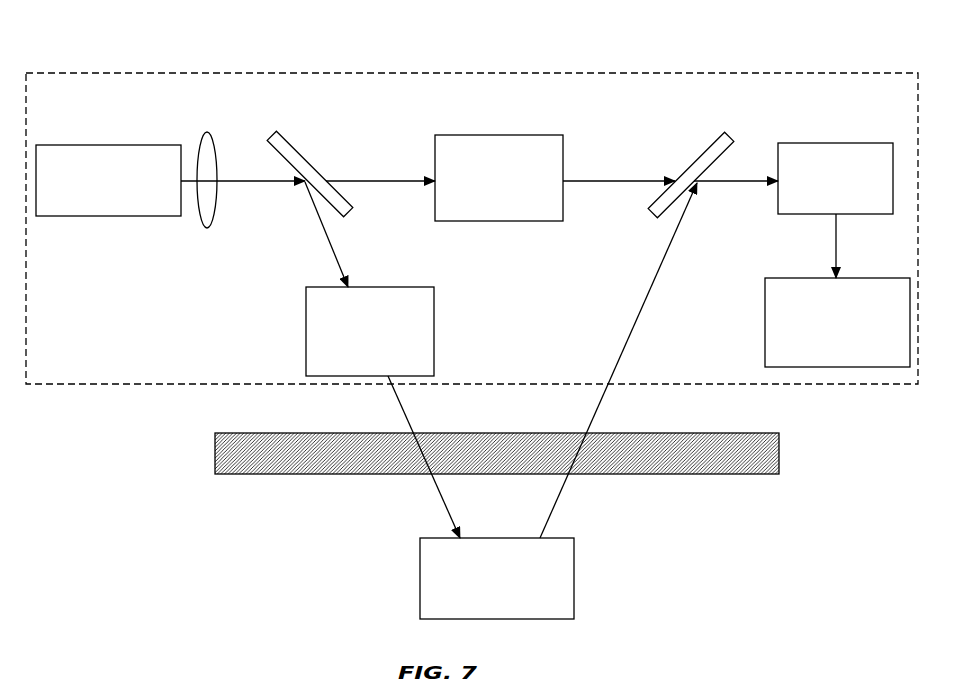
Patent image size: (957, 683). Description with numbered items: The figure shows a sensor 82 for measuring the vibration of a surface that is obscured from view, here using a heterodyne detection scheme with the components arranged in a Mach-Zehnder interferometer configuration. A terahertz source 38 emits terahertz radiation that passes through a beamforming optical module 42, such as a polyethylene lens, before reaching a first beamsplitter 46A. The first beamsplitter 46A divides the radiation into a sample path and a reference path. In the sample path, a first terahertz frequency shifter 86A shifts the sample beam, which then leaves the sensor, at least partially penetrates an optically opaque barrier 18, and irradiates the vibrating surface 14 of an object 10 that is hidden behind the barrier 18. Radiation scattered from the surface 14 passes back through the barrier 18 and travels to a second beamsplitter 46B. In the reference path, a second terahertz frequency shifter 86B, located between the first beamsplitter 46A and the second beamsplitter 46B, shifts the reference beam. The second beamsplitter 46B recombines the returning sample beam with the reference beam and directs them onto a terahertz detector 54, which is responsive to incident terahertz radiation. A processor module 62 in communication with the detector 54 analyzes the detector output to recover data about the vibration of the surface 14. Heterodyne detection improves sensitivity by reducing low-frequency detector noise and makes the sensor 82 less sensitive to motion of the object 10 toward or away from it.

The sensor 82 is at (208, 73).
The terahertz source 38 is at (119, 202).
The beamforming optical module 42 is at (212, 225).
The first beamsplitter 46A is at (334, 215).
The second beamsplitter 46B is at (650, 212).
The first terahertz frequency shifter 86A is at (389, 368).
The second terahertz frequency shifter 86B is at (517, 217).
The detector 54 is at (847, 200).
The processor module 62 is at (848, 359).
The barrier 18 is at (779, 460).
The vibrating surface 14 is at (557, 540).
The object 10 is at (508, 600).